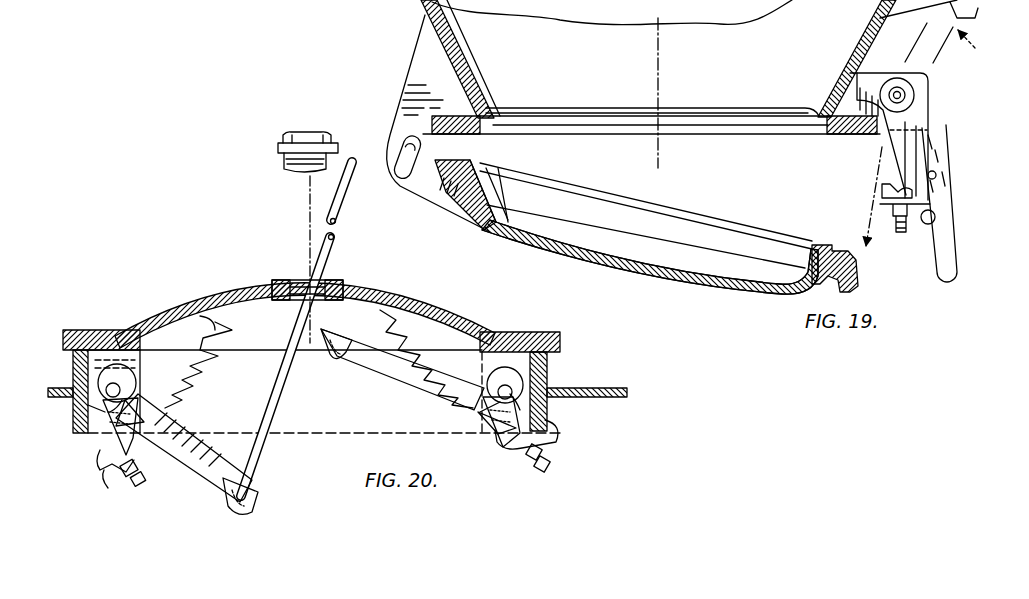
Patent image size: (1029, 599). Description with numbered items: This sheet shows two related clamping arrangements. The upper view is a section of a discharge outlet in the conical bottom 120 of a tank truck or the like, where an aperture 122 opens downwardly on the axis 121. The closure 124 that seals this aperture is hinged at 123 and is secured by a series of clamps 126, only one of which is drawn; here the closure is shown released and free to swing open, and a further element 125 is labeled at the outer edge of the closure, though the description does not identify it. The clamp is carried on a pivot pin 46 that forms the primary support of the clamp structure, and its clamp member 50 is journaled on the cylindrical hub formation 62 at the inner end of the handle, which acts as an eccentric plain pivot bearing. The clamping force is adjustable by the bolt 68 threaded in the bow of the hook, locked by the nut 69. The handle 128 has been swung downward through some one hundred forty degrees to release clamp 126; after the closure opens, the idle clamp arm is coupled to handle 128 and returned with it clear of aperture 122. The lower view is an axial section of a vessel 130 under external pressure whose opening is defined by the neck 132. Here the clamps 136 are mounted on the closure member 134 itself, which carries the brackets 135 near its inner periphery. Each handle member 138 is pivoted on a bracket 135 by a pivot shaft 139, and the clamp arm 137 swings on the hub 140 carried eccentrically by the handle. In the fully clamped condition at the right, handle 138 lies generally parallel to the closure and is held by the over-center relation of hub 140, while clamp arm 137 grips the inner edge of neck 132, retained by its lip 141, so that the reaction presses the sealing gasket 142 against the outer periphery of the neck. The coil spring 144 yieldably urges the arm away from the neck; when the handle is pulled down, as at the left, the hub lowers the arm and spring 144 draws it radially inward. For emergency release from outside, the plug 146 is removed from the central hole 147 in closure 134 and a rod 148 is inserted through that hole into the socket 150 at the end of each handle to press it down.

In FIG. 19, the pivot pin 46 is at (901, 95).
In FIG. 19, the clamp member 50 is at (943, 162).
In FIG. 19, the cylindrical hub formation 62 is at (852, 84).
In FIG. 19, the bolt 68 is at (944, 250).
In FIG. 20, the bolt 68 is at (142, 486).
In FIG. 19, the nut 69 is at (936, 217).
In FIG. 20, the nut 69 is at (138, 468).
In FIG. 19, the conical bottom 120 is at (445, 58).
In FIG. 19, the axis 121 is at (657, 58).
In FIG. 19, the aperture 122 is at (660, 116).
In FIG. 19, the hinge 123 is at (392, 126).
In FIG. 19, the closure 124 is at (555, 250).
In FIG. 19, the end block 125 is at (834, 252).
In FIG. 19, the clamp 126 is at (968, 124).
In FIG. 19, the handle 128 is at (930, 256).
In FIG. 20, the vessel 130 is at (598, 386).
In FIG. 20, the neck 132 is at (88, 430).
In FIG. 20, the closure member 134 is at (380, 290).
In FIG. 20, the bracket 135 is at (200, 316).
In FIG. 20, the clamp 136 is at (150, 395).
In FIG. 20, the clamp arm 137 is at (140, 420).
In FIG. 20, the handle member 138 is at (358, 362).
In FIG. 20, the pivot shaft 139 is at (100, 448).
In FIG. 20, the hub 140 is at (140, 372).
In FIG. 20, the lip 141 is at (106, 490).
In FIG. 20, the sealing gasket 142 is at (95, 330).
In FIG. 20, the coil spring 144 is at (210, 364).
In FIG. 20, the plug 146 is at (278, 170).
In FIG. 20, the central hole 147 is at (282, 280).
In FIG. 20, the rod 148 is at (342, 228).
In FIG. 20, the socket 150 is at (316, 340).